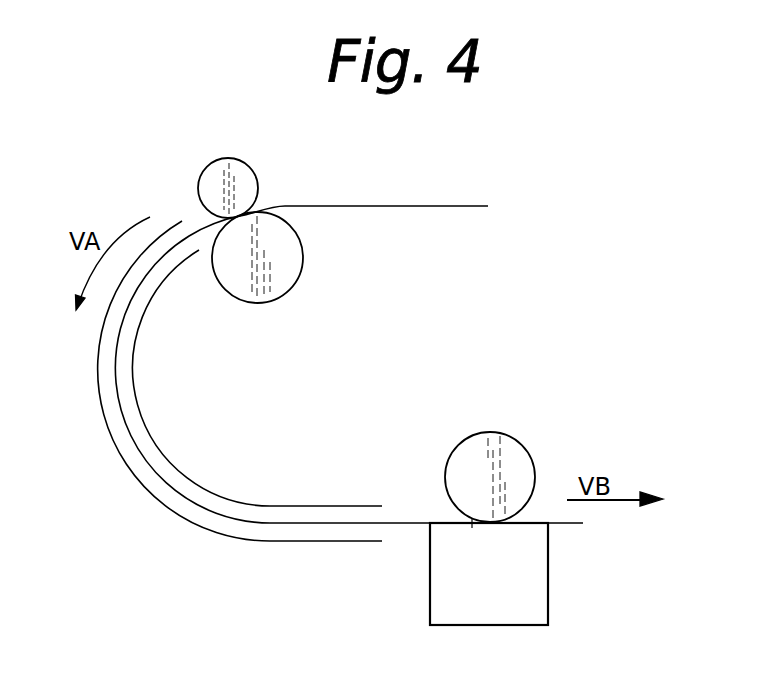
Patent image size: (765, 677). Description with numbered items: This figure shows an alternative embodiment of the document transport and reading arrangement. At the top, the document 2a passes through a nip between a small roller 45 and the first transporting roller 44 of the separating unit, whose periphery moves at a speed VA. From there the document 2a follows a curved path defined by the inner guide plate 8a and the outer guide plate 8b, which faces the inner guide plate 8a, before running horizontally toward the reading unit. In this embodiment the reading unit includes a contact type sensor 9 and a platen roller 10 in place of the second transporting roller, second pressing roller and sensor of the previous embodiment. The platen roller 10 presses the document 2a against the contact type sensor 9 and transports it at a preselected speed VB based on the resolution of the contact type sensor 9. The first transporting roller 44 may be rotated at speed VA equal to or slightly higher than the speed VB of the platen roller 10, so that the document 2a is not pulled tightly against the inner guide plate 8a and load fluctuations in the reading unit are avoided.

The document 2a is at (357, 206).
The inner guide plate 8a is at (172, 452).
The outer guide plate 8b is at (275, 542).
The pinch roller 45 is at (212, 176).
The first transporting roller 44 is at (287, 268).
The platen roller 10 is at (503, 448).
The contact type sensor 9 is at (548, 587).